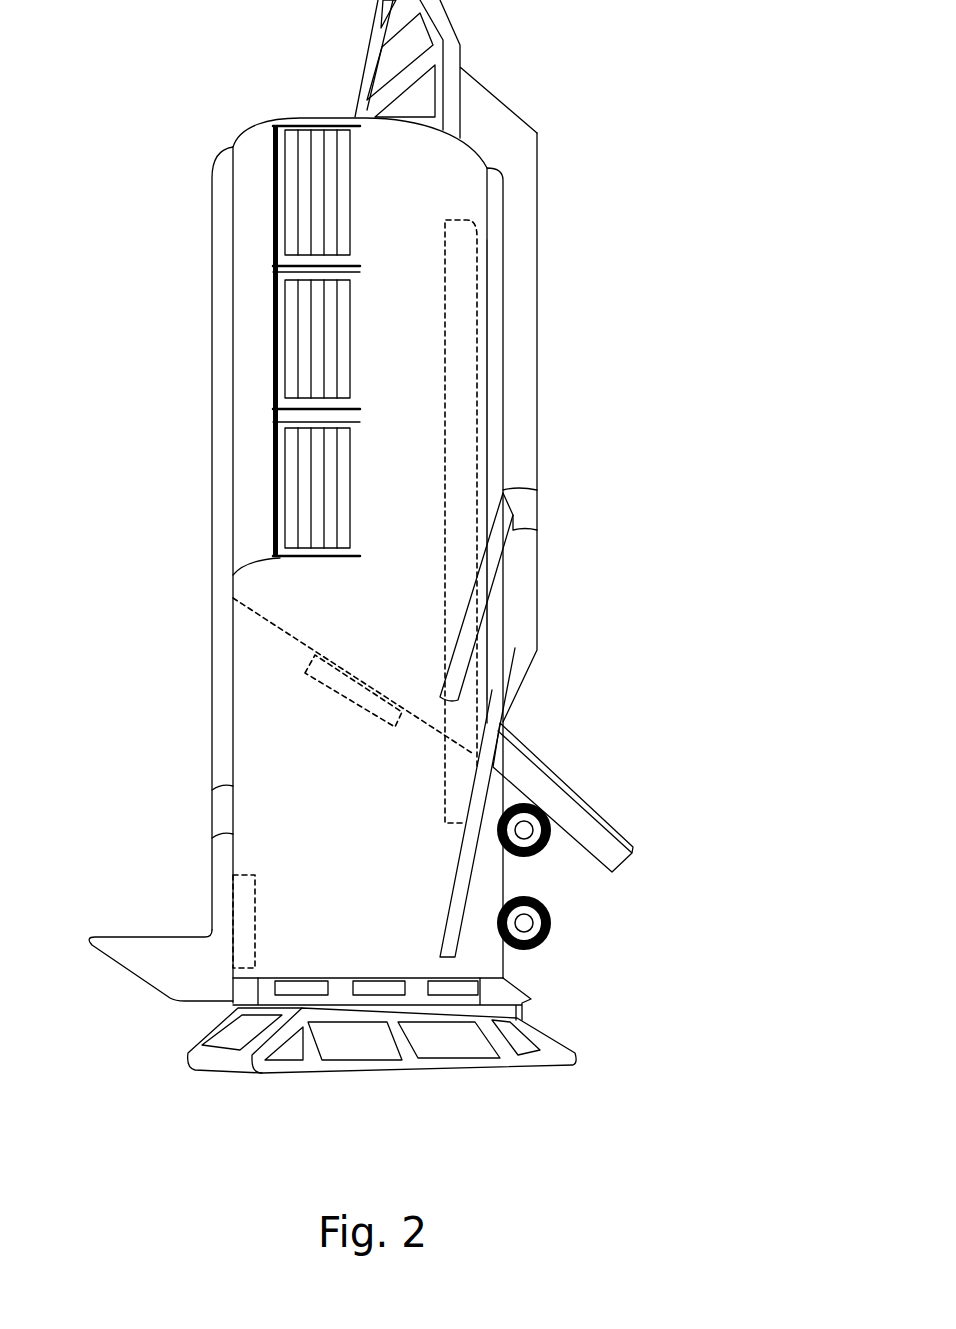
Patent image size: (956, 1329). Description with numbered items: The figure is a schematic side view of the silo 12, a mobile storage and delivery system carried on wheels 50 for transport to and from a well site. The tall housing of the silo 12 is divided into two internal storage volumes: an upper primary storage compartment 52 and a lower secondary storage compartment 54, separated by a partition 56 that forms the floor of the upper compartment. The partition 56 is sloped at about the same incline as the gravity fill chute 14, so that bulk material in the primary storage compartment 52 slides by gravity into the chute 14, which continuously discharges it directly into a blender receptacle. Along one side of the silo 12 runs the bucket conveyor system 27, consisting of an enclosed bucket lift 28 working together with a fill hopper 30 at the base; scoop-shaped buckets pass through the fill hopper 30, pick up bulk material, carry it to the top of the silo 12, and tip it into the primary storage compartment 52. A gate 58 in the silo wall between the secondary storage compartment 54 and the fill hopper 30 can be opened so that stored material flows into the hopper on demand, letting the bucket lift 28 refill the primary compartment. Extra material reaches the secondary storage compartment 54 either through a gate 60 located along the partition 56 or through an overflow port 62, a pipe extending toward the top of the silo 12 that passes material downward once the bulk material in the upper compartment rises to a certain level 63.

The silo 12 is at (175, 108).
The gravity fill chute 14 is at (600, 808).
The bucket conveyor system 27 is at (162, 678).
The bucket lift 28 is at (218, 552).
The fill hopper 30 is at (153, 962).
The wheels 50 is at (550, 930).
The primary storage compartment 52 is at (402, 493).
The secondary storage compartment 54 is at (307, 812).
The partition 56 is at (290, 617).
The gate 58 is at (255, 925).
The gate 60 is at (343, 698).
The overflow port 62 is at (476, 335).
The level 63 is at (468, 222).